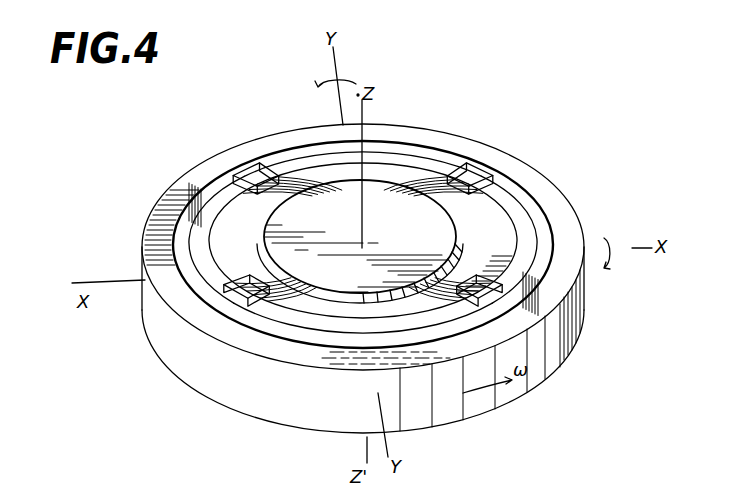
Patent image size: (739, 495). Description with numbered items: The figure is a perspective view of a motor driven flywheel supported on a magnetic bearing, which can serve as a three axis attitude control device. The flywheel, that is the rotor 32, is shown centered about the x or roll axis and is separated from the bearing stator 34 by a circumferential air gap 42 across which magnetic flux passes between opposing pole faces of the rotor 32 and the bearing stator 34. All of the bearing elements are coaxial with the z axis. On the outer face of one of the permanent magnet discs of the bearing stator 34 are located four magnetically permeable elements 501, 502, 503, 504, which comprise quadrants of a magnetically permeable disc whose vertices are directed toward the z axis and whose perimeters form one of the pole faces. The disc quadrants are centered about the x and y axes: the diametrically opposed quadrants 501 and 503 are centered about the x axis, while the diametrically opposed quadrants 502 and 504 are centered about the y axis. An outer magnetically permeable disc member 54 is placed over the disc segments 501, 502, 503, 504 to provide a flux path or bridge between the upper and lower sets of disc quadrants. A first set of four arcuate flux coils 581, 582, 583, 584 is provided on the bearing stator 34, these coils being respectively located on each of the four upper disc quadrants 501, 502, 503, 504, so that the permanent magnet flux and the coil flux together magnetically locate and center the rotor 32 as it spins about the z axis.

The rotor 32 is at (552, 192).
The bearing stator 34 is at (495, 192).
The circumferential air gap 42 is at (458, 157).
The outer magnetically permeable disc member 54 is at (397, 228).
The magnetically permeable element (disc quadrant) 501 is at (200, 223).
The magnetically permeable element (disc quadrant) 502 is at (298, 160).
The magnetically permeable element (disc quadrant) 503 is at (523, 228).
The magnetically permeable element (disc quadrant) 504 is at (297, 337).
The arcuate flux coil 581 is at (233, 287).
The arcuate flux coil 582 is at (397, 170).
The arcuate flux coil 583 is at (483, 283).
The arcuate flux coil 584 is at (327, 330).